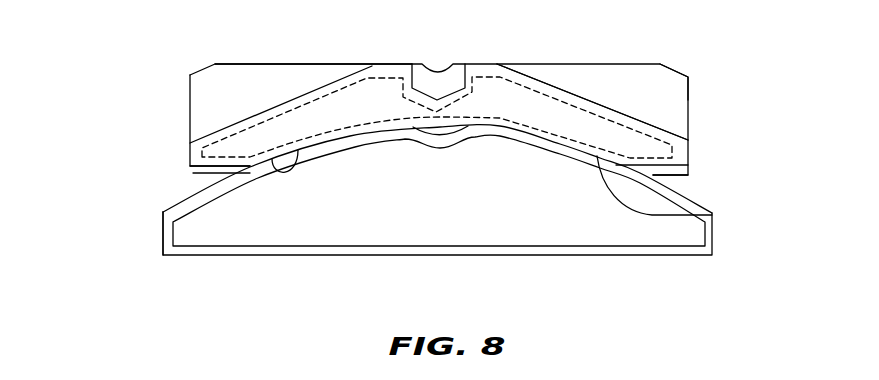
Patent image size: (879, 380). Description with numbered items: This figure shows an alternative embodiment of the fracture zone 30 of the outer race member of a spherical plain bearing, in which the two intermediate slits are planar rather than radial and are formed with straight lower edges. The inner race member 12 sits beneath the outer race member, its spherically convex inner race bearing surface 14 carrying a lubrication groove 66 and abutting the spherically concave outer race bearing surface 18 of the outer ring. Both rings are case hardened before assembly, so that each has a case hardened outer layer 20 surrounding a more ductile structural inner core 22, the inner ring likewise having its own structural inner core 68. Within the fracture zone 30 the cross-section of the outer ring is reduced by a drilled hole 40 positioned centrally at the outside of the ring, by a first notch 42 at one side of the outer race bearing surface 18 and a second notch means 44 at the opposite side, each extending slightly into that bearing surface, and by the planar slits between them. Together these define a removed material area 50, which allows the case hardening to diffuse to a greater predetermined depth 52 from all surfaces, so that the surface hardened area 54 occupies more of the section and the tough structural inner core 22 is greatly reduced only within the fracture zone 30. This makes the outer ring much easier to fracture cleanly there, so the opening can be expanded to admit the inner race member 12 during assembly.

The inner race member 12 is at (713, 257).
The inner race bearing surface 14 is at (712, 213).
The outer race bearing surface 18 is at (298, 150).
The case hardened outer layer 20 is at (682, 147).
The structural inner core 22 is at (490, 100).
The fracture zone 30 is at (688, 77).
The drilled hole 40 is at (438, 76).
The first notch 42 is at (193, 174).
The second notch means 44 is at (677, 173).
The removed material area 50 is at (307, 65).
The predetermined depth 52 is at (375, 110).
The surface hardened area 54 is at (563, 92).
The lubrication groove 66 is at (444, 131).
The structural inner core 68 is at (414, 198).